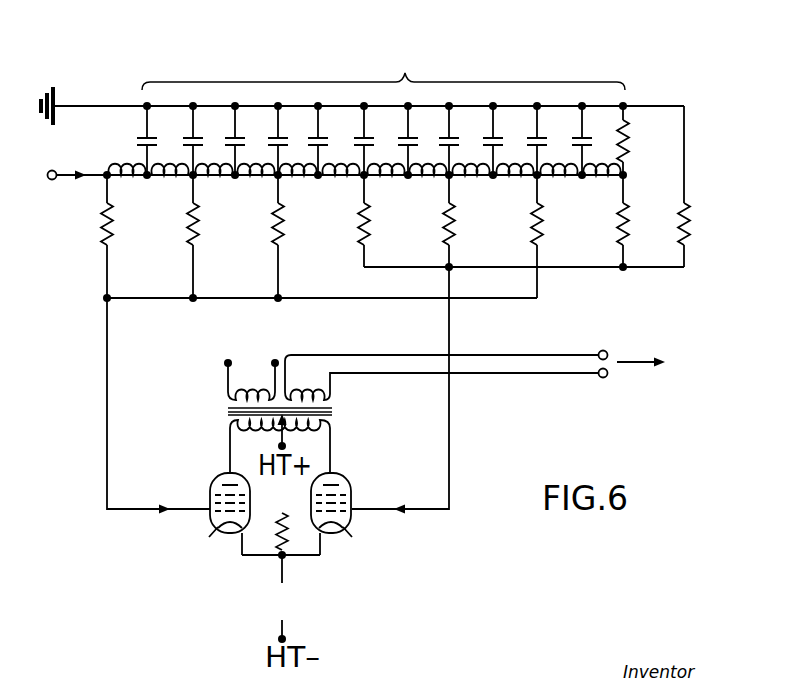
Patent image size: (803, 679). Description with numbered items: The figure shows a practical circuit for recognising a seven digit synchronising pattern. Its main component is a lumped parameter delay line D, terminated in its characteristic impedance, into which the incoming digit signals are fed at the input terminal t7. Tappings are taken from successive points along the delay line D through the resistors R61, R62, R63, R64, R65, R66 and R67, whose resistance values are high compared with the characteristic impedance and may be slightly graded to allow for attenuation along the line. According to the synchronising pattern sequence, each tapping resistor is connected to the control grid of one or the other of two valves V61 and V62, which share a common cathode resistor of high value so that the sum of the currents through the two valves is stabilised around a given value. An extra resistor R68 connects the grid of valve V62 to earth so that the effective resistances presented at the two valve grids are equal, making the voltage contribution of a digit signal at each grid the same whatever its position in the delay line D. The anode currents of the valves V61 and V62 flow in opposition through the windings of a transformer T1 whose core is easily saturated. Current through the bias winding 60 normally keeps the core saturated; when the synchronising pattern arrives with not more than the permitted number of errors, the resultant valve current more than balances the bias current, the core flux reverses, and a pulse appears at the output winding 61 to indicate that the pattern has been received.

The delay line D is at (383, 62).
The input terminal t7 is at (61, 173).
The tapping resistor R61 is at (84, 236).
The tapping resistor R62 is at (164, 236).
The tapping resistor R63 is at (251, 236).
The tapping resistor R64 is at (337, 221).
The tapping resistor R65 is at (421, 221).
The tapping resistor R66 is at (511, 236).
The tapping resistor R67 is at (598, 221).
The extra resistor R68 is at (715, 186).
The transformer T1 is at (332, 410).
The bias winding 60 is at (233, 387).
The output winding 61 is at (299, 390).
The valve V61 is at (212, 517).
The valve V62 is at (351, 517).